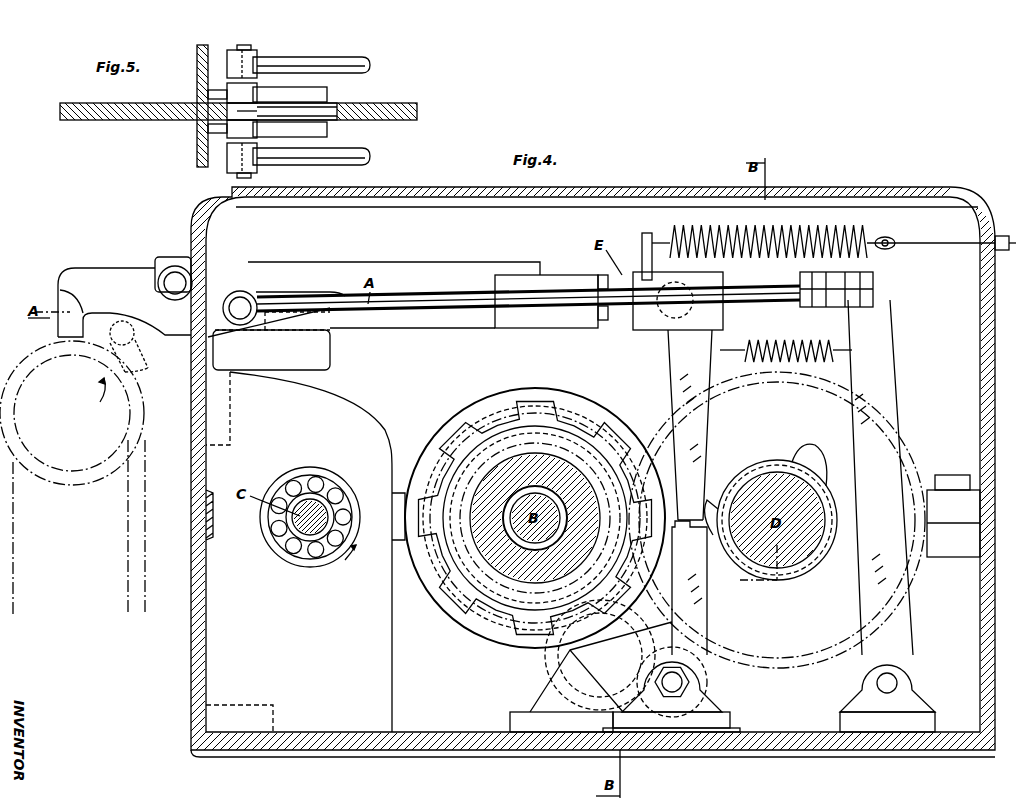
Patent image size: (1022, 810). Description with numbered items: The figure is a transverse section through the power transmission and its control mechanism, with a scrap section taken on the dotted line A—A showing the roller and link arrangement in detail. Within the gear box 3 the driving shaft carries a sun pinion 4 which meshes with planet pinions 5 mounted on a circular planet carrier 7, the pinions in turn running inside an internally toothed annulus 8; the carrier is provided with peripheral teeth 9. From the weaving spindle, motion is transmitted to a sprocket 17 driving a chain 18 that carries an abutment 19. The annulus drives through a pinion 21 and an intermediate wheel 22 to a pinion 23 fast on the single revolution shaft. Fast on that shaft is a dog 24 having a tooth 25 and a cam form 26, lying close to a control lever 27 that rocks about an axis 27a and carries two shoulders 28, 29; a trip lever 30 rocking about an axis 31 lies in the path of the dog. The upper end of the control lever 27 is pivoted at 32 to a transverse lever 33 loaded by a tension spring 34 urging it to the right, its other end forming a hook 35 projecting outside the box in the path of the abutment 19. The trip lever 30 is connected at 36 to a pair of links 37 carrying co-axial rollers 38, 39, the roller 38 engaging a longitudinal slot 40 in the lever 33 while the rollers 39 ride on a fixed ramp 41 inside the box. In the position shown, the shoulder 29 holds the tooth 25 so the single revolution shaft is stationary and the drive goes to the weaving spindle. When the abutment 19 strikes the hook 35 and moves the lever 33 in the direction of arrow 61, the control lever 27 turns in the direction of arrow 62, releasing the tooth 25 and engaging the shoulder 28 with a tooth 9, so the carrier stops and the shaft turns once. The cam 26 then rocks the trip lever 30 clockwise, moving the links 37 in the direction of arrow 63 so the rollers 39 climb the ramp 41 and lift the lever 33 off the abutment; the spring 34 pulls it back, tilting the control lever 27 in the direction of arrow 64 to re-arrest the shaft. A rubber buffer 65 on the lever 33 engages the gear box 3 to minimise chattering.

In FIG. 5, the gear box 3 is at (197, 73).
In FIG. 4, the gear box 3 is at (191, 568).
In FIG. 4, the sun pinion 4 is at (560, 465).
In FIG. 4, the planet pinions 5 is at (475, 415).
In FIG. 4, the planet carrier 7 is at (555, 430).
In FIG. 4, the internally toothed annulus 8 is at (608, 405).
In FIG. 4, the peripheral teeth 9 is at (525, 400).
In FIG. 4, the sprocket 17 is at (70, 468).
In FIG. 4, the chain 18 is at (128, 506).
In FIG. 4, the abutment 19 is at (133, 340).
In FIG. 4, the pinion 21 is at (450, 475).
In FIG. 4, the intermediate wheel 22 is at (548, 650).
In FIG. 4, the pinion 23 is at (915, 452).
In FIG. 4, the dog 24 is at (740, 466).
In FIG. 4, the tooth 25 is at (712, 504).
In FIG. 4, the cam form 26 is at (808, 456).
In FIG. 4, the control lever 27 is at (690, 467).
In FIG. 4, the axis 27a is at (672, 682).
In FIG. 4, the shoulder 28 is at (689, 588).
In FIG. 4, the shoulder 29 is at (744, 566).
In FIG. 4, the trip lever 30 is at (880, 477).
In FIG. 4, the axis 31 is at (895, 682).
In FIG. 4, the pivot 32 is at (754, 252).
In FIG. 5, the transverse lever 33 is at (417, 112).
In FIG. 4, the transverse lever 33 is at (468, 272).
In FIG. 4, the tension spring 34 is at (760, 257).
In FIG. 4, the hook 35 is at (75, 290).
In FIG. 4, the connection 36 is at (828, 304).
In FIG. 5, the links 37 is at (365, 60).
In FIG. 4, the links 37 is at (565, 288).
In FIG. 5, the roller 38 is at (282, 111).
In FIG. 4, the roller 38 is at (528, 298).
In FIG. 5, the rollers 39 is at (255, 62).
In FIG. 4, the rollers 39 is at (238, 290).
In FIG. 5, the longitudinal slot 40 is at (297, 111).
In FIG. 4, the longitudinal slot 40 is at (265, 292).
In FIG. 5, the fixed ramp 41 is at (328, 90).
In FIG. 4, the fixed ramp 41 is at (228, 330).
In FIG. 4, the arrow 61 is at (112, 259).
In FIG. 4, the arrow 62 is at (606, 362).
In FIG. 4, the arrow 63 is at (762, 313).
In FIG. 4, the arrow 64 is at (730, 652).
In FIG. 4, the rubber buffer 65 is at (175, 268).